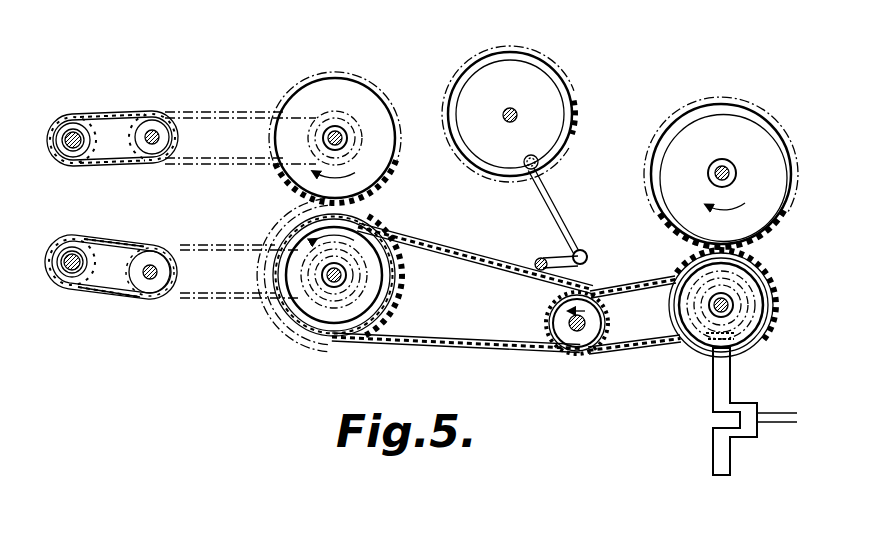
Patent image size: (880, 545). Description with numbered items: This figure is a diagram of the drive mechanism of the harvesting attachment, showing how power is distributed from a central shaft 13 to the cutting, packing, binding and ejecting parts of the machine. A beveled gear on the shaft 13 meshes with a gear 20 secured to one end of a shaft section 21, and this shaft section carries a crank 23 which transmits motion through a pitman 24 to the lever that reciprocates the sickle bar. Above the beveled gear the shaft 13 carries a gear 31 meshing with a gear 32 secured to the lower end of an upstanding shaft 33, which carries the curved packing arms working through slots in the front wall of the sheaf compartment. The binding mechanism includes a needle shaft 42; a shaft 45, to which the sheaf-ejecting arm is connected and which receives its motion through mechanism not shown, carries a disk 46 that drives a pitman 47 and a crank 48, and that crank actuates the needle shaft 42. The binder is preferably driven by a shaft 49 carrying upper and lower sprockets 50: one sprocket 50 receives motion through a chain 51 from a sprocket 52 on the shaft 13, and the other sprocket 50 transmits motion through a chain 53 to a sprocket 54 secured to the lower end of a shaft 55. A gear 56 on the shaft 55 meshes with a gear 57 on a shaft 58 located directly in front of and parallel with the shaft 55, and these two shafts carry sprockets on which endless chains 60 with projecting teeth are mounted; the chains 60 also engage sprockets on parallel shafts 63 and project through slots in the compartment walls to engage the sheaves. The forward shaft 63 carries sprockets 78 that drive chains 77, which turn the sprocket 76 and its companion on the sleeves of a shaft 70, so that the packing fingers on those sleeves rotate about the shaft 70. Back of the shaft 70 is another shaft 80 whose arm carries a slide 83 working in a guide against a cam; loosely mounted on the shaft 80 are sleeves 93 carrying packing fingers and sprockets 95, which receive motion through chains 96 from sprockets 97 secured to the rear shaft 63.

The shaft 13 is at (729, 308).
The gear 20 is at (705, 345).
The shaft section 21 is at (730, 393).
The crank 23 is at (740, 440).
The pitman 24 is at (785, 422).
The gear 31 is at (765, 272).
The gear 32 is at (722, 108).
The upstanding shaft 33 is at (731, 170).
The needle shaft 42 is at (538, 260).
The shaft 45 is at (512, 108).
The disk 46 is at (568, 104).
The pitman 47 is at (549, 205).
The crank 48 is at (582, 250).
The shaft 49 is at (567, 343).
The sprockets 50 is at (560, 318).
The chain 51 is at (625, 290).
The sprocket 52 is at (668, 342).
The chain 53 is at (470, 350).
The sprocket 54 is at (375, 278).
The shaft 55 is at (330, 285).
The gear 56 is at (380, 225).
The gear 57 is at (325, 90).
The shaft 58 is at (343, 133).
The endless chains 60 is at (232, 112).
The shafts 63 is at (160, 130).
The shaft 70 is at (74, 130).
The sprocket 76 is at (85, 163).
The chains 77 is at (108, 114).
The sprockets 78 is at (149, 112).
The shaft 80 is at (78, 288).
The slide 83 is at (150, 299).
The sleeves 93 is at (112, 235).
The sprockets 95 is at (100, 240).
The chains 96 is at (140, 240).
The sprockets 97 is at (168, 275).